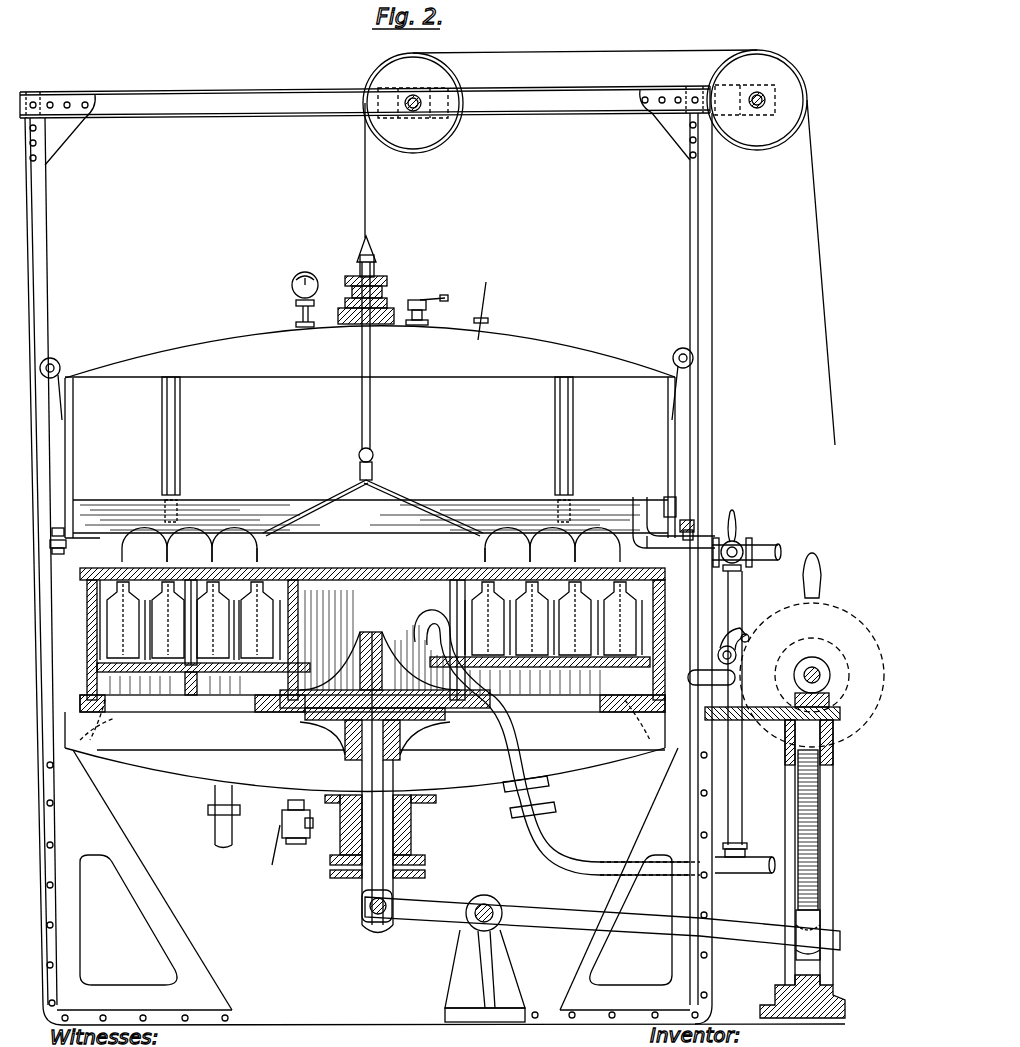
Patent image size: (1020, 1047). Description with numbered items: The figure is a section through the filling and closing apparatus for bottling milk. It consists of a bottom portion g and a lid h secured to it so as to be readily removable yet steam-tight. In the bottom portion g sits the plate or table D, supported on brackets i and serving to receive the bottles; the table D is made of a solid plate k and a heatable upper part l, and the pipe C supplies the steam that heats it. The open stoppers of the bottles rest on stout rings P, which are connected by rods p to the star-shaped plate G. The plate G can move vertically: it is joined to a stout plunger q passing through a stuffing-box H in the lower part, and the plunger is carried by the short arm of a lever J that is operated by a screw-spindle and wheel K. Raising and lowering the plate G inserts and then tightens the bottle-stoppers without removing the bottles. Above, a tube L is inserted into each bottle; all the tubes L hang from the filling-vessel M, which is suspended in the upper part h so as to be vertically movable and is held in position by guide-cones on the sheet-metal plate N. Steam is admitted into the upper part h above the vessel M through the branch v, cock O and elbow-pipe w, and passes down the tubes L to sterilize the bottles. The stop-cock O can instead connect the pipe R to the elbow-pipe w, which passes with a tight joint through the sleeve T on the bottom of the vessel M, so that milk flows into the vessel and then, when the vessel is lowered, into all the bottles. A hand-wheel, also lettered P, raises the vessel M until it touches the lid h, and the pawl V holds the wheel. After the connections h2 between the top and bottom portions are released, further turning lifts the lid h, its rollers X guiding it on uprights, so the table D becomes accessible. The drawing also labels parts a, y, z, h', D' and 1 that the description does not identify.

The pulley a is at (428, 135).
The lid h is at (370, 432).
The filling-vessel M is at (245, 497).
The suspension rod z is at (372, 400).
The stuffing box y is at (382, 300).
The rollers X is at (366, 374).
The bracket h' is at (57, 527).
The sheet-metal plate N is at (193, 545).
The tube L is at (371, 556).
The table D is at (377, 606).
The upper part of table l is at (105, 625).
The solid plate k is at (373, 675).
The rods p is at (298, 588).
The rack lower plate D' is at (372, 693).
The bottom portion g is at (195, 755).
The brackets i is at (95, 738).
The star-shaped plate G is at (450, 710).
The plunger q is at (385, 773).
The stuffing-box H is at (412, 825).
The lever J is at (525, 908).
The steam pipe C is at (515, 730).
The elbow-pipe w is at (640, 495).
The sleeve T is at (640, 500).
The connections h2 is at (693, 530).
The stop-cock O is at (740, 545).
The pipe R is at (768, 562).
The steam branch v is at (740, 800).
The pawl V is at (722, 630).
The pin 1 is at (745, 634).
The rings P is at (782, 612).
The screw-spindle and wheel K is at (760, 728).